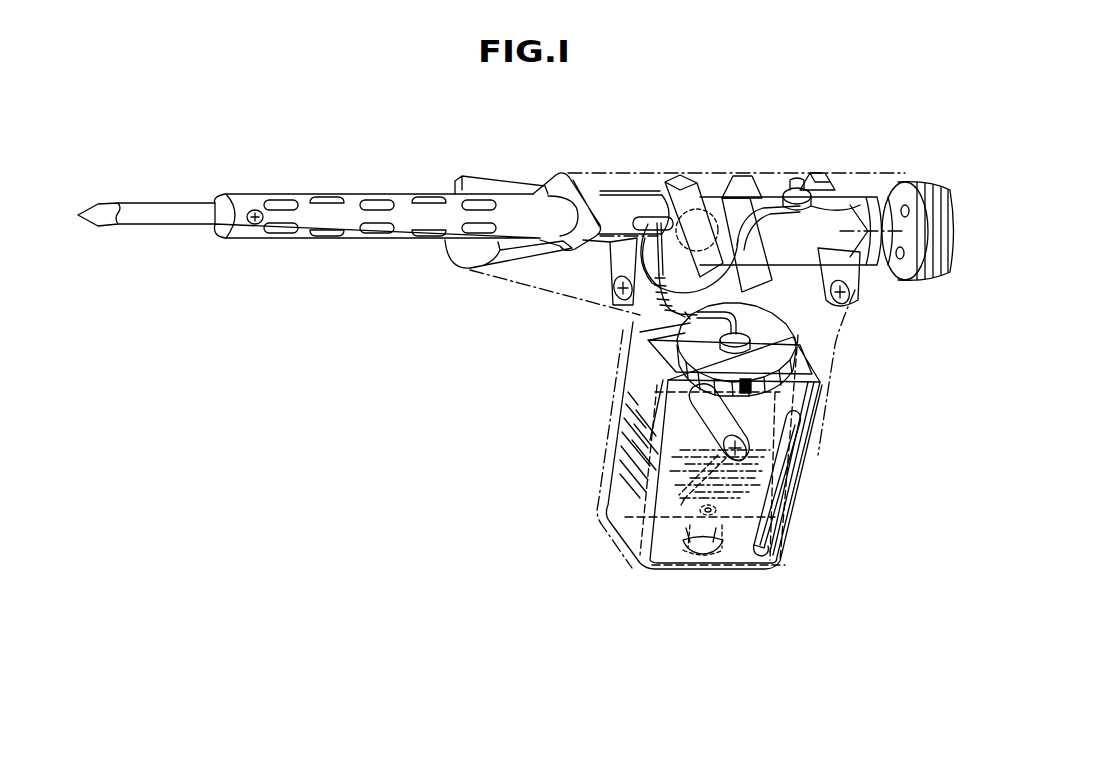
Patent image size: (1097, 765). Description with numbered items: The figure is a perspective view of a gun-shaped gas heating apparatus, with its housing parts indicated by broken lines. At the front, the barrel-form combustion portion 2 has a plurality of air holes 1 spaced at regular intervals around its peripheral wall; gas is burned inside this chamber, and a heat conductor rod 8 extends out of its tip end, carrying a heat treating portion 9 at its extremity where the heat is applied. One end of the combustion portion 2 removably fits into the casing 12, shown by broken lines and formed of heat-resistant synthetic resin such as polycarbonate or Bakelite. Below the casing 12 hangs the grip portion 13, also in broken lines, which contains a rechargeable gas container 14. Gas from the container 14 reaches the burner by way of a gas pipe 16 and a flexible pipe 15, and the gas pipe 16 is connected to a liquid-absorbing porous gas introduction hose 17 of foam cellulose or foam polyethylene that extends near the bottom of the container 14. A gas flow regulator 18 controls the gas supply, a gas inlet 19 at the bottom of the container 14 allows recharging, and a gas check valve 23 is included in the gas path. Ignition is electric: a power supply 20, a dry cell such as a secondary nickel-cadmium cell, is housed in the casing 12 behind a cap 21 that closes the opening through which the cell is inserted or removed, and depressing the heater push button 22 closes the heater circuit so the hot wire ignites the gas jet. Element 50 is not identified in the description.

The air holes 1 is at (330, 197).
The combustion portion 2 is at (355, 196).
The heat conductor rod 8 is at (188, 205).
The heat treating portion 9 is at (100, 210).
The casing 12 is at (600, 170).
The grip portion 13 is at (838, 362).
The gas container 14 is at (618, 478).
The flexible pipe 15 is at (680, 306).
The gas pipe 16 is at (745, 315).
The gas introduction hose 17 is at (795, 432).
The gas flow regulator 18 is at (822, 380).
The gas inlet 19 is at (732, 565).
The power supply 20 is at (860, 196).
The cap 21 is at (958, 226).
The heater push button 22 is at (800, 188).
The gas check valve 23 is at (668, 566).
The filter 50 is at (640, 432).